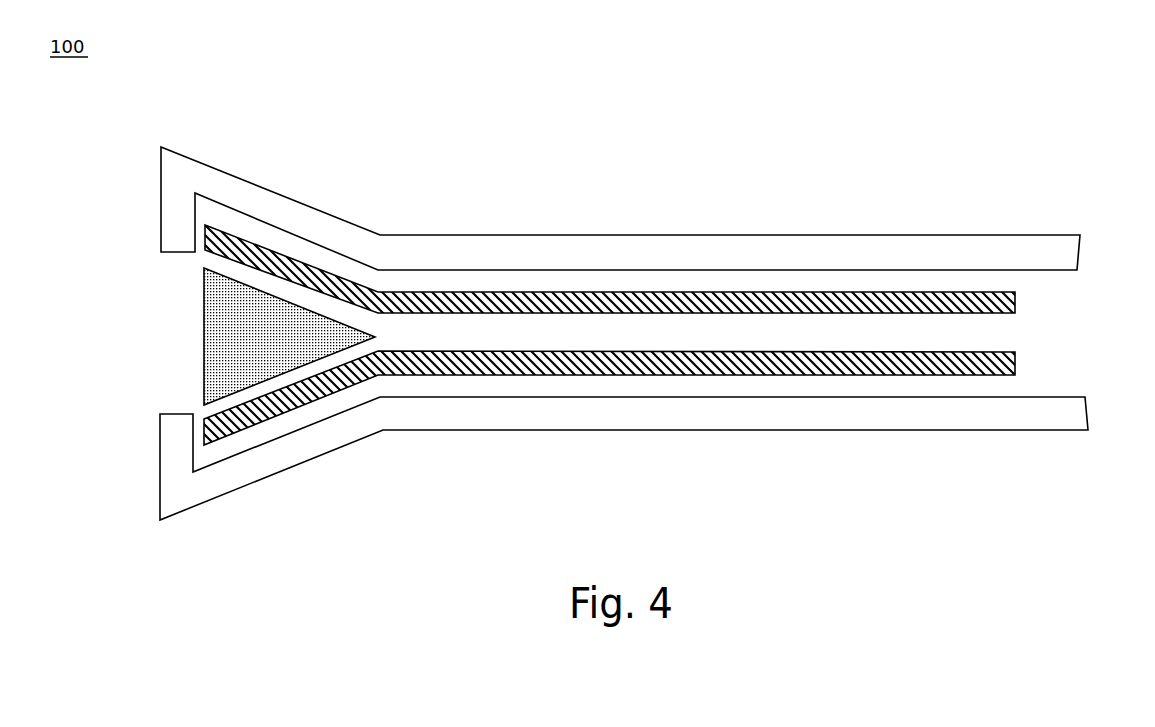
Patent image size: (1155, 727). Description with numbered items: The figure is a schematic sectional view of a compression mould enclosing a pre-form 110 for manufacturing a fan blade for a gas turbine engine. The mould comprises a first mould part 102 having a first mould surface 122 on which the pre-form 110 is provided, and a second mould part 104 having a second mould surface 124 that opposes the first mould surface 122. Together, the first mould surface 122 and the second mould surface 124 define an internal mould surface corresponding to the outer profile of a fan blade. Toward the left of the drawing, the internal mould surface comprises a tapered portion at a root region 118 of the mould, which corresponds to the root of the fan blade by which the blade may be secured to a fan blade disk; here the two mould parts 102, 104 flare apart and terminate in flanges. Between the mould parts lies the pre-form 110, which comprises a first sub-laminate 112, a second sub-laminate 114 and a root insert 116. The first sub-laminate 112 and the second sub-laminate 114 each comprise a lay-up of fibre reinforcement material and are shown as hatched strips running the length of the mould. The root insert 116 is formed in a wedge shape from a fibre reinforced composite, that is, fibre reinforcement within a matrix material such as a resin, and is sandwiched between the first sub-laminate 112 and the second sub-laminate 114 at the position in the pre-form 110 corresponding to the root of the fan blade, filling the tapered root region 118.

The first mould part 102 is at (623, 423).
The second mould part 104 is at (499, 248).
The pre-form 110 is at (200, 297).
The first sub-laminate 112 is at (445, 360).
The second sub-laminate 114 is at (473, 293).
The root insert 116 is at (228, 352).
The root region 118 is at (310, 200).
The first mould surface 122 is at (844, 393).
The second mould surface 124 is at (810, 272).